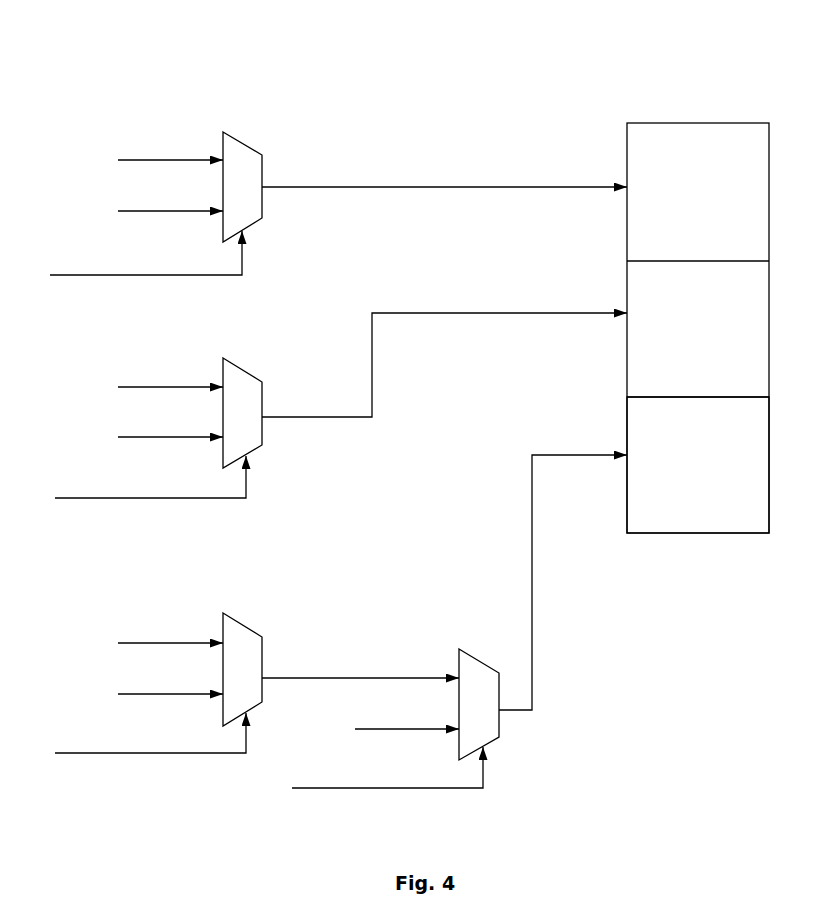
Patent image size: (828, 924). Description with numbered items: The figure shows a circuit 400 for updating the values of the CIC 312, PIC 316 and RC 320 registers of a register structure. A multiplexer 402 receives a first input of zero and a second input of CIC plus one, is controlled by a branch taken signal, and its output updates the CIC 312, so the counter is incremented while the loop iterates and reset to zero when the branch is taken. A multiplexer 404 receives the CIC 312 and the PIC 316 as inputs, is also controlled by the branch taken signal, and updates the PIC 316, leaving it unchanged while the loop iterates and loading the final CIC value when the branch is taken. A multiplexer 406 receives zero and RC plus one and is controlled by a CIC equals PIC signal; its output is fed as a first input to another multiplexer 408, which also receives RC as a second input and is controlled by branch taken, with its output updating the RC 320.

The circuit 400 is at (140, 68).
The multiplexer 402 is at (248, 143).
The multiplexer 404 is at (235, 365).
The multiplexer 406 is at (248, 628).
The multiplexer 408 is at (502, 727).
The CIC 312 is at (698, 220).
The PIC 316 is at (698, 358).
The RC 320 is at (698, 465).